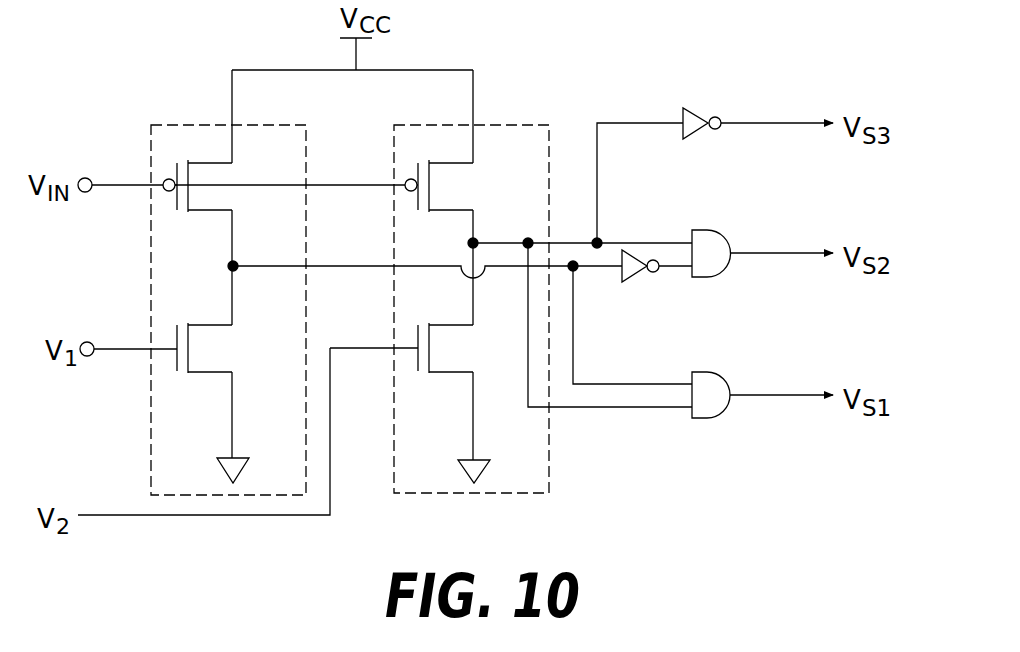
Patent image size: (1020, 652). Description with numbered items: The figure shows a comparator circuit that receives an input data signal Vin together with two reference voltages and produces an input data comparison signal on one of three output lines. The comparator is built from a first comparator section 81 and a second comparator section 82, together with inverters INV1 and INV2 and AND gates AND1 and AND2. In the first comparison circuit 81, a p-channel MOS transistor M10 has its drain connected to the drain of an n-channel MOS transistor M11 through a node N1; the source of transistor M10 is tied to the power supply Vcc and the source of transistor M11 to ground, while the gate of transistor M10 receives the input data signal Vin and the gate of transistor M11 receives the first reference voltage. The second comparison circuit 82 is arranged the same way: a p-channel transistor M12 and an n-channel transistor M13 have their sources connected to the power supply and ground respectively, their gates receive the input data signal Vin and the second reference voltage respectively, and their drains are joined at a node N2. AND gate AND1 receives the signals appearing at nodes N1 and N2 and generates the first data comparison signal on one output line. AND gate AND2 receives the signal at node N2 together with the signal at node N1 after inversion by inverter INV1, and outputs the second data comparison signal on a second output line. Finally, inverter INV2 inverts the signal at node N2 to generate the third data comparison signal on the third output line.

The first comparator section 81 is at (174, 137).
The second comparator section 82 is at (525, 452).
The p-channel MOS transistor M10 is at (226, 179).
The n-channel MOS transistor M11 is at (211, 348).
The p-channel transistor M12 is at (449, 186).
The n-channel transistor M13 is at (411, 348).
The node N1 is at (252, 284).
The node N2 is at (453, 239).
The inverter INV1 is at (649, 286).
The inverter INV2 is at (712, 107).
The AND gate AND1 is at (747, 387).
The AND gate AND2 is at (747, 245).